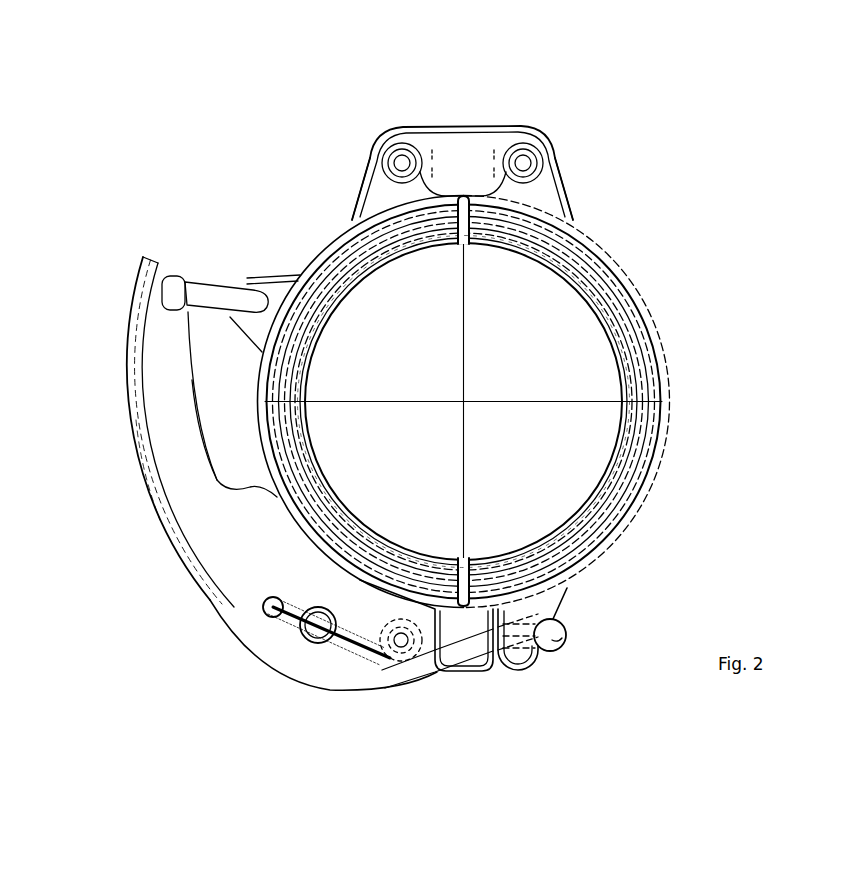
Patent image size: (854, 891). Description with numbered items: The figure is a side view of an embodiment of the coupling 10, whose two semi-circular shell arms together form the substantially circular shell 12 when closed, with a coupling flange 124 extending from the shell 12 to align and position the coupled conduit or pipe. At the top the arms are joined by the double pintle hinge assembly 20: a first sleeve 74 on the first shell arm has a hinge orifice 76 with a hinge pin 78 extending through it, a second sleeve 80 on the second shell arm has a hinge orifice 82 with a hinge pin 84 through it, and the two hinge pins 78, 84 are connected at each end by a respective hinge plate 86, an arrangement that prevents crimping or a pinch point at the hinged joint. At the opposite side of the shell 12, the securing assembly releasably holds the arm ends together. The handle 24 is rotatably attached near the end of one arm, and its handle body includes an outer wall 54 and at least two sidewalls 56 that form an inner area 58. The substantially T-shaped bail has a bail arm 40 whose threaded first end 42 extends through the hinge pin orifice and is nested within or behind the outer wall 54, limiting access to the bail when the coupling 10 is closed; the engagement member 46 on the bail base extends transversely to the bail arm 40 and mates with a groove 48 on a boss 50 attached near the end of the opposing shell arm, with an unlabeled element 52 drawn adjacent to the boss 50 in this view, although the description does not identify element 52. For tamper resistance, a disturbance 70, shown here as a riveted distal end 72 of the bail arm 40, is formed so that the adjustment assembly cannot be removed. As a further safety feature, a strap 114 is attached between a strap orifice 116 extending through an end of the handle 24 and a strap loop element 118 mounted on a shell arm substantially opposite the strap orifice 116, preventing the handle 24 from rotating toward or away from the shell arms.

The coupling 10 is at (722, 295).
The shell 12 is at (692, 378).
The hinge assembly 20 is at (487, 77).
The handle 24 is at (116, 362).
The bail arm 40 is at (437, 684).
The first end 42 is at (325, 650).
The engagement member 46 is at (553, 652).
The groove 48 is at (535, 666).
The boss 50 is at (582, 604).
The slot 52 is at (500, 664).
The outer wall 54 is at (182, 463).
The sidewalls 56 is at (185, 465).
The inner area 58 is at (258, 572).
The disturbance 70 is at (255, 623).
The distal end 72 is at (289, 661).
The first sleeve 74 is at (369, 160).
The hinge orifice 76 is at (402, 143).
The hinge pin 78 is at (410, 150).
The second sleeve 80 is at (576, 195).
The hinge orifice 82 is at (531, 150).
The hinge pin 84 is at (541, 155).
The hinge plate 86 is at (476, 140).
The strap 114 is at (246, 262).
The strap orifice 116 is at (175, 276).
The strap loop element 118 is at (240, 335).
The coupling flange 124 is at (602, 300).